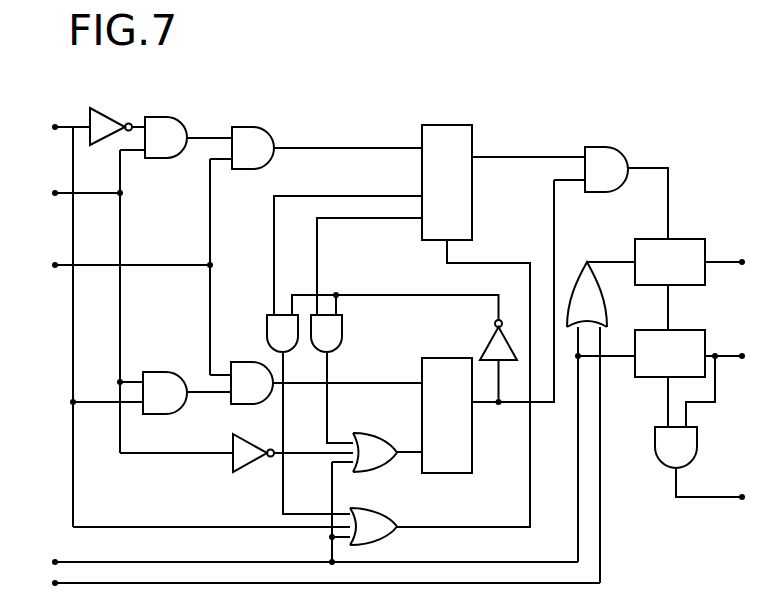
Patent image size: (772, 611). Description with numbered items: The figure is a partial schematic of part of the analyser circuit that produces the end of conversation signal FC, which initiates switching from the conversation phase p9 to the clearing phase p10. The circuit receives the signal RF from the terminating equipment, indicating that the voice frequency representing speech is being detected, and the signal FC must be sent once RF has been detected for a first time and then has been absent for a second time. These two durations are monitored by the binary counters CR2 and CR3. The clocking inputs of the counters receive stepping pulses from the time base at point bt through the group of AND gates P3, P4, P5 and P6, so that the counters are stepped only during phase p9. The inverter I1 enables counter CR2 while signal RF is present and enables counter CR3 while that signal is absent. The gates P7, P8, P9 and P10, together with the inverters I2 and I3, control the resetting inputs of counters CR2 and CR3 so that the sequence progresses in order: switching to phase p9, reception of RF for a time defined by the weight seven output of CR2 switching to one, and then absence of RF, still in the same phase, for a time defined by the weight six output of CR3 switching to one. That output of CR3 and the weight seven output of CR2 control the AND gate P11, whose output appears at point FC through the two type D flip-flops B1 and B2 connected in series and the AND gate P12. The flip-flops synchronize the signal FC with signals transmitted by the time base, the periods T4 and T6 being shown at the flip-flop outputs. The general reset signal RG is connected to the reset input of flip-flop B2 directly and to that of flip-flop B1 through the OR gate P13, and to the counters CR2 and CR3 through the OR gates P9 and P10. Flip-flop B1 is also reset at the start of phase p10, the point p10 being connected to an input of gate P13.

The inverter I1 is at (98, 120).
The inverter I2 is at (254, 460).
The inverter I3 is at (490, 350).
The AND gate P3 is at (152, 385).
The AND gate P4 is at (243, 376).
The AND gate P5 is at (166, 130).
The AND gate P6 is at (251, 140).
The gate P7 is at (274, 332).
The gate P8 is at (334, 336).
The OR gate P9 is at (366, 446).
The OR gate P10 is at (388, 536).
The AND gate P11 is at (600, 182).
The AND gate P12 is at (694, 450).
The OR gate P13 is at (574, 300).
The binary counter CR2 is at (464, 470).
The binary counter CR3 is at (472, 144).
The type D flip-flop B1 is at (676, 248).
The type D flip-flop B2 is at (676, 338).
The signal RF is at (34, 127).
The phase p9 is at (34, 192).
The time base point bt is at (32, 264).
The general reset signal RG is at (36, 562).
The phase p10 is at (40, 583).
The time base period T4 is at (727, 249).
The time base period T6 is at (727, 343).
The end of conversation signal FC is at (730, 512).